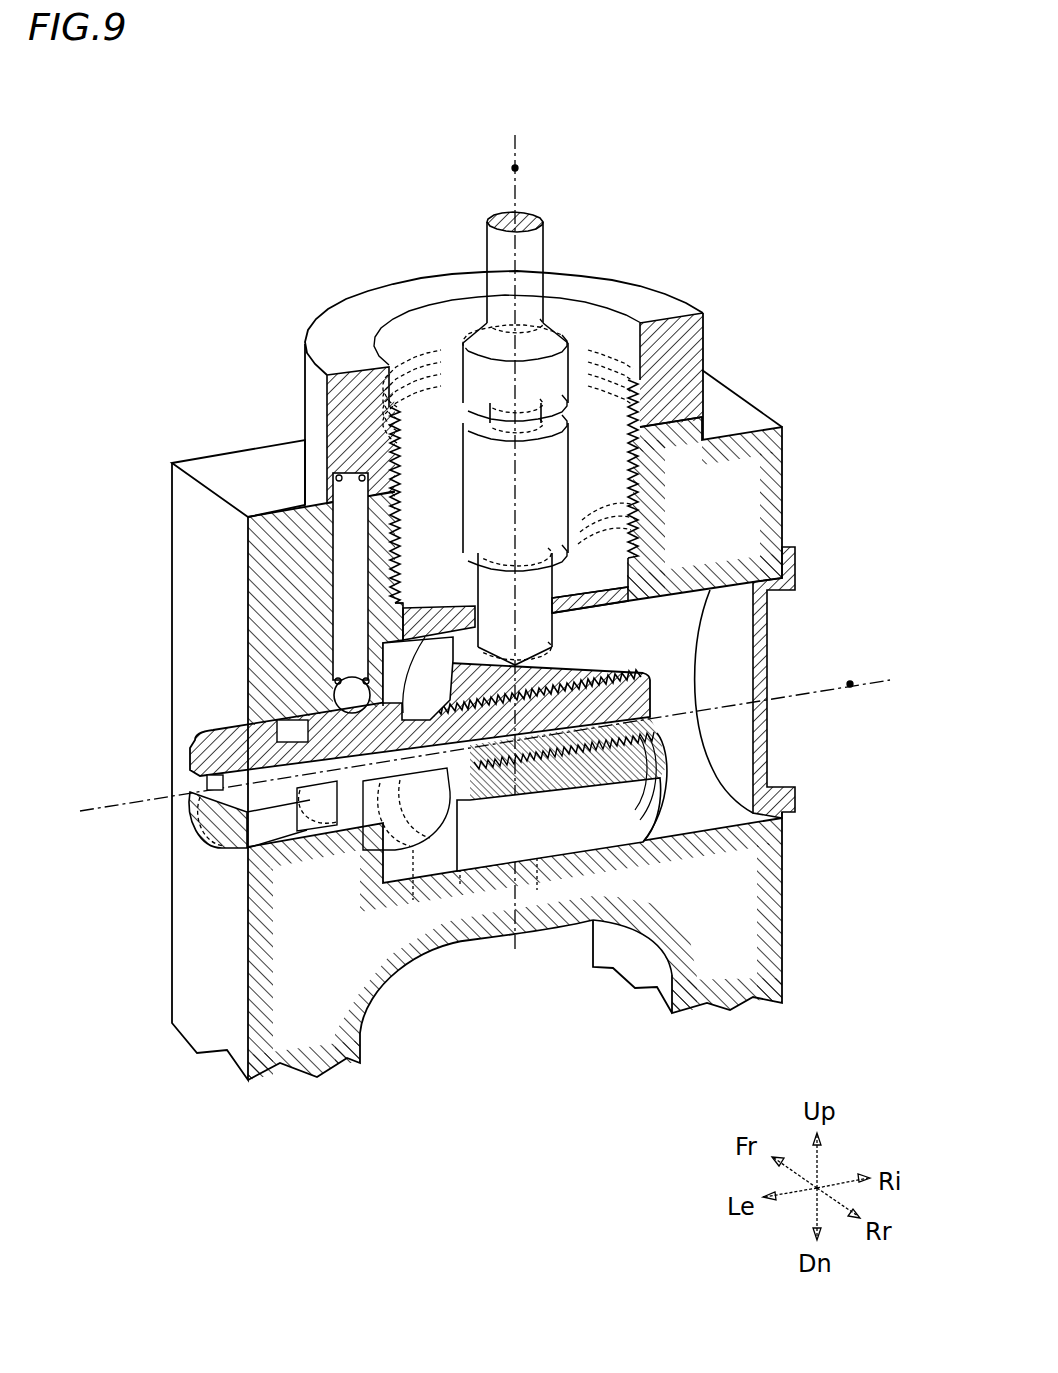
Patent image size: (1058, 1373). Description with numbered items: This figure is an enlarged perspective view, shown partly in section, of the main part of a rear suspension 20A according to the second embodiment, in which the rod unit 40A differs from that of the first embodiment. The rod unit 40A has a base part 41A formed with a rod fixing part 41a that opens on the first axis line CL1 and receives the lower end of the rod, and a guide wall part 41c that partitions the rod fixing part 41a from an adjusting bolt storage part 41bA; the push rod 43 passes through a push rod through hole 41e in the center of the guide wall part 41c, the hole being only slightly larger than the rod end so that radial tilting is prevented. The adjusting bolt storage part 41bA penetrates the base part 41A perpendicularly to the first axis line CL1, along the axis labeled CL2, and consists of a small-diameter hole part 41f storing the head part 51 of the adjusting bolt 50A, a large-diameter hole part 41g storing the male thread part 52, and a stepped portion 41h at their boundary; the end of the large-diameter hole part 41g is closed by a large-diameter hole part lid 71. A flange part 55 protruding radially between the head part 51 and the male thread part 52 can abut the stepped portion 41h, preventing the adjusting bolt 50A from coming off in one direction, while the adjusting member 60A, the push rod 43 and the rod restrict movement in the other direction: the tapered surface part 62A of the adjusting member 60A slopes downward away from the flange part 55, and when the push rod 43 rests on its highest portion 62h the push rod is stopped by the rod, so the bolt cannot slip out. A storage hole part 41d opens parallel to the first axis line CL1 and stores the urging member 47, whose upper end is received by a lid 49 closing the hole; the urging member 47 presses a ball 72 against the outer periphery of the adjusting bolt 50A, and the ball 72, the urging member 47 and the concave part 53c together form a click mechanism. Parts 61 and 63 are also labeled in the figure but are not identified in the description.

The rod unit 40A is at (185, 272).
The rear suspension 20A is at (173, 220).
The base part 41A is at (202, 947).
The rod fixing part 41a is at (625, 457).
The adjusting bolt storage part 41bA is at (548, 1002).
The guide wall part 41c is at (583, 580).
The storage hole part 41d is at (325, 502).
The push rod through hole 41e is at (480, 606).
The small-diameter hole part 41f is at (460, 887).
The large-diameter hole part 41g is at (537, 887).
The stepped portion 41h is at (413, 897).
The push rod 43 is at (532, 258).
The urging member 47 is at (347, 458).
The lid 49 is at (341, 345).
The adjusting bolt 50A is at (200, 762).
The head part 51 is at (207, 825).
The male thread part 52 is at (663, 752).
The concave part 53c is at (332, 840).
The flange part 55 is at (447, 827).
The adjusting member 60A is at (658, 813).
The nut 61 is at (597, 752).
The tapered surface part 62A is at (573, 663).
The highest portion of the tapered surface part 62h is at (455, 650).
The washer 63 is at (565, 635).
The large-diameter hole part lid 71 is at (797, 572).
The ball 72 is at (352, 677).
The first axis line CL1 is at (517, 167).
The center line CL2 is at (850, 683).